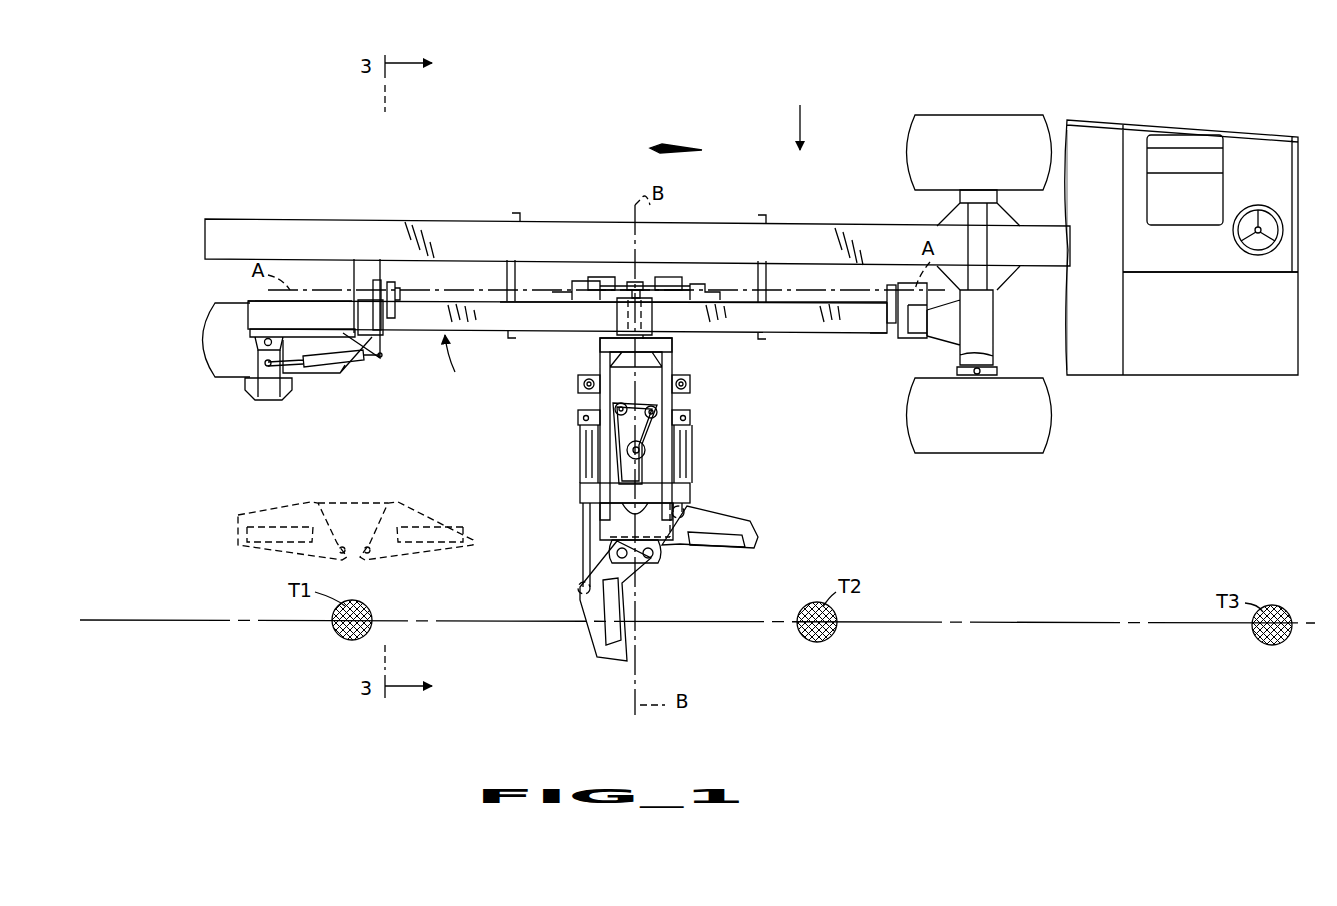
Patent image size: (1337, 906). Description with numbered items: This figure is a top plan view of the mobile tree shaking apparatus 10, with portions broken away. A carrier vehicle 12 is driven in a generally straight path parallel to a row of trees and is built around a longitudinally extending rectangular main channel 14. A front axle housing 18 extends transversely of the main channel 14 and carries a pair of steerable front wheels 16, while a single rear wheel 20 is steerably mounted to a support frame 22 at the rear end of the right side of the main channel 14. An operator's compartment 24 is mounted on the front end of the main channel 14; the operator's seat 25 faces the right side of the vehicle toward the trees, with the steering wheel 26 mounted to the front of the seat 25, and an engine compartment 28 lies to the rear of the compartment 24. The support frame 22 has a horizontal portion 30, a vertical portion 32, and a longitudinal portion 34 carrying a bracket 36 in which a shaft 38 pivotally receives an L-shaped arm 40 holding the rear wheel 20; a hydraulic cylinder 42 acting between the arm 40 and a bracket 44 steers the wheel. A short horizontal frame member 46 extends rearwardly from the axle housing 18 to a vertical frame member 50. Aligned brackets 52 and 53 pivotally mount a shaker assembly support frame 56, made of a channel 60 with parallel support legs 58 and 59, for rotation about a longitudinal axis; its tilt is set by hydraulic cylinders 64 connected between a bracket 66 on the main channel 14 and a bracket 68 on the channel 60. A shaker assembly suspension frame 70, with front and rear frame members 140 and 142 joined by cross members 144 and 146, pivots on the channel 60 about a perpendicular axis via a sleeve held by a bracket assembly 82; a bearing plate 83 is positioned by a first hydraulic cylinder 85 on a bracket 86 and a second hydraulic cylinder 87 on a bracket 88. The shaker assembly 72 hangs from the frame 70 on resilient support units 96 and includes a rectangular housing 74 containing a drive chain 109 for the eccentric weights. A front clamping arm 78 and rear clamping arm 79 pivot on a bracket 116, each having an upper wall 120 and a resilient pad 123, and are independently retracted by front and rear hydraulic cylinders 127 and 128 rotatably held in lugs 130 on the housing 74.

The tree shaking apparatus 10 is at (800, 114).
The carrier vehicle 12 is at (1116, 119).
The main channel 14 is at (870, 226).
The front wheels 16 is at (991, 164).
The front axle housing 18 is at (995, 197).
The rear wheel 20 is at (196, 336).
The support frame 22 is at (371, 259).
The operator's compartment 24 is at (1169, 253).
The operator's seat 25 is at (1170, 201).
The steering wheel 26 is at (1268, 212).
The engine compartment 28 is at (1082, 269).
The horizontal portion 30 is at (352, 277).
The vertical portion 32 is at (384, 336).
The longitudinal portion 34 is at (250, 300).
The bracket 36 is at (262, 341).
The shaft 38 is at (264, 344).
The L-shaped arm 40 is at (266, 392).
The hydraulic cylinder 42 is at (335, 367).
The bracket 44 is at (382, 347).
The horizontal frame member 46 is at (981, 330).
The vertical frame member 50 is at (905, 338).
The bracket 52 is at (384, 290).
The bracket 53 is at (890, 288).
The shaker assembly support frame 56 is at (460, 361).
The support leg 58 is at (886, 320).
The support leg 59 is at (396, 310).
The channel 60 is at (775, 308).
The hydraulic cylinders 64 is at (505, 277).
The bracket 66 is at (512, 214).
The bracket 68 is at (512, 336).
The shaker assembly suspension frame 70 is at (597, 353).
The shaker assembly 72 is at (657, 464).
The housing 74 is at (605, 527).
The front clamping arm 78 is at (759, 530).
The rear clamping arm 79 is at (593, 637).
The bracket assembly 82 is at (656, 319).
The bearing plate 83 is at (632, 282).
The first hydraulic cylinder 85 is at (668, 277).
The bracket 86 is at (700, 290).
The second hydraulic cylinder 87 is at (606, 300).
The bracket 88 is at (568, 292).
The inner support units 96 is at (576, 385).
The drive chain 109 is at (620, 442).
The bracket 116 is at (598, 546).
The upper wall 120 is at (684, 511).
The resilient pad 123 is at (728, 548).
The front hydraulic cylinder 127 is at (692, 436).
The rear hydraulic cylinder 128 is at (580, 436).
The lugs 130 is at (576, 418).
The front frame member 140 is at (660, 410).
The rear frame member 142 is at (612, 408).
The cross member 144 is at (600, 491).
The cross member 146 is at (660, 345).